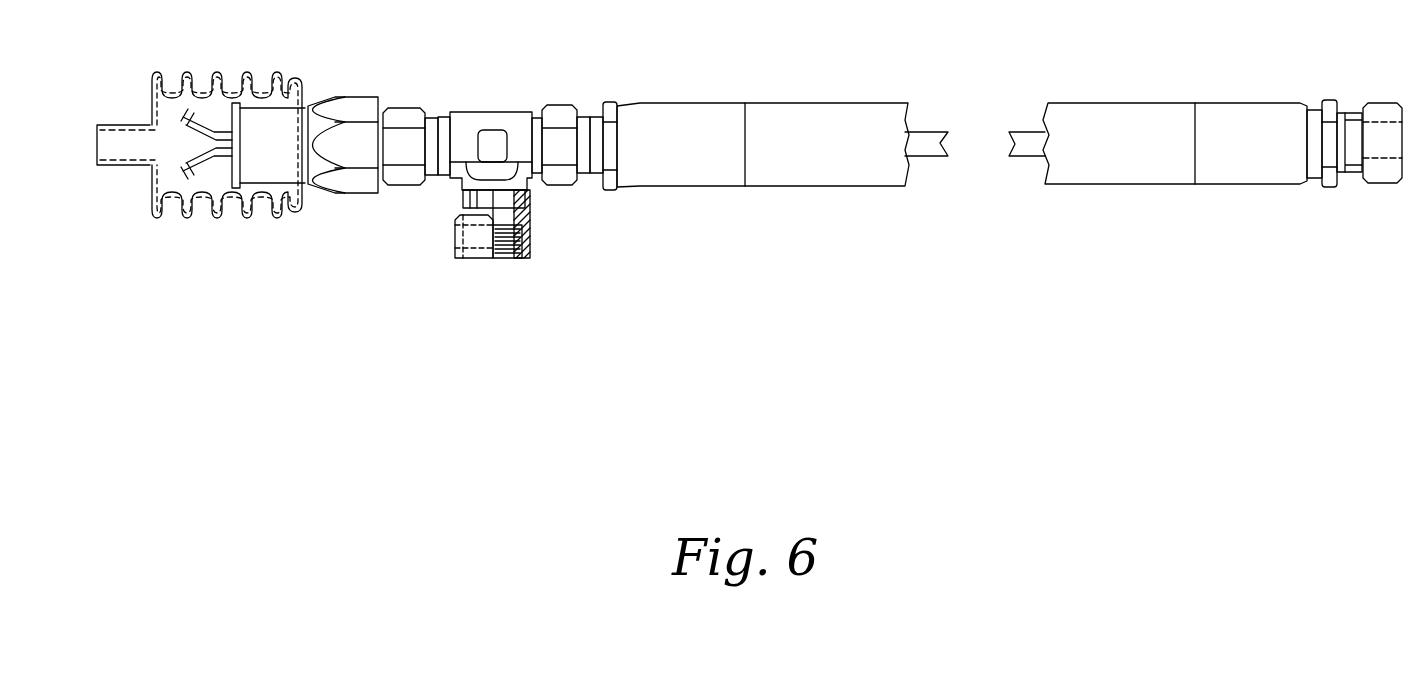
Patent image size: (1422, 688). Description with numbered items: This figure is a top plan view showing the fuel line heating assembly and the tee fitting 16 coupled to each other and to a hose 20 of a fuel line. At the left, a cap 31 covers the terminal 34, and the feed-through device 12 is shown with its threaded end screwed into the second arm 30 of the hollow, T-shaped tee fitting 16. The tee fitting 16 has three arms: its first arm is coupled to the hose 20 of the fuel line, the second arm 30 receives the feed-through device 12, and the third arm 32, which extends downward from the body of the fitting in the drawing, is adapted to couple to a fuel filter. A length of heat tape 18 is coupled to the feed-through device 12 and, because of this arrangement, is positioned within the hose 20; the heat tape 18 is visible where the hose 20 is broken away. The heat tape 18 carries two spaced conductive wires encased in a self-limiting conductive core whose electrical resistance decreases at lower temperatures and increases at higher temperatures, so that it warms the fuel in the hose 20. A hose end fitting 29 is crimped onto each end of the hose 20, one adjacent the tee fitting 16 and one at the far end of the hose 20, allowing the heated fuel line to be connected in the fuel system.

The feed-through device 12 is at (357, 107).
The tee fitting 16 is at (512, 108).
The heat tape 18 is at (918, 147).
The hose 20 is at (662, 165).
The hose end fitting 29 is at (557, 175).
The second arm 30 is at (395, 108).
The cap 31 is at (152, 180).
The third arm 32 is at (465, 233).
The terminal 34 is at (202, 137).